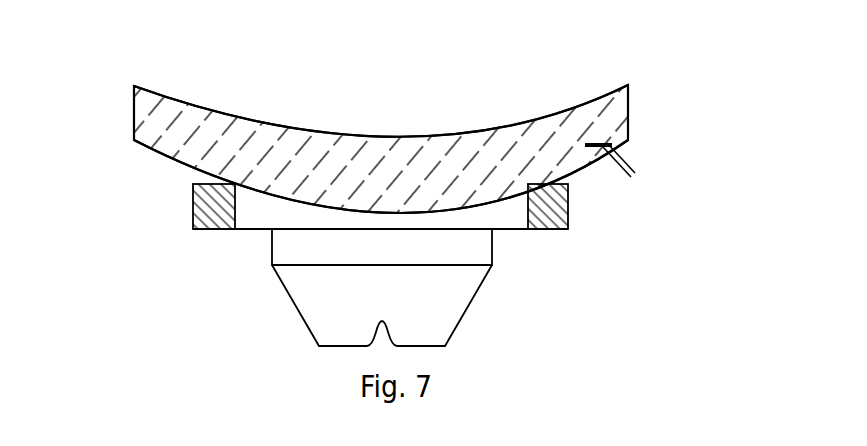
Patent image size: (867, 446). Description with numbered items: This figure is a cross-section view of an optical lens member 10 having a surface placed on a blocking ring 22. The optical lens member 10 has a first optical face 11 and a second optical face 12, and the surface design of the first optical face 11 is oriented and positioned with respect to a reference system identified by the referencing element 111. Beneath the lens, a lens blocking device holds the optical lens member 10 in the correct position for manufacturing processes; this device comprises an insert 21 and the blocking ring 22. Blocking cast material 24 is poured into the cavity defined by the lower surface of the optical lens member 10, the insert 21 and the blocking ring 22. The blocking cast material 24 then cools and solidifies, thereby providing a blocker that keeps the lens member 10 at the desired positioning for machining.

The optical lens member 10 is at (630, 108).
The second optical face 12 is at (543, 112).
The first optical face 11 is at (223, 170).
The referencing element 111 is at (635, 170).
The blocking ring 22 is at (568, 212).
The blocking cast material 24 is at (258, 210).
The insert 21 is at (442, 292).